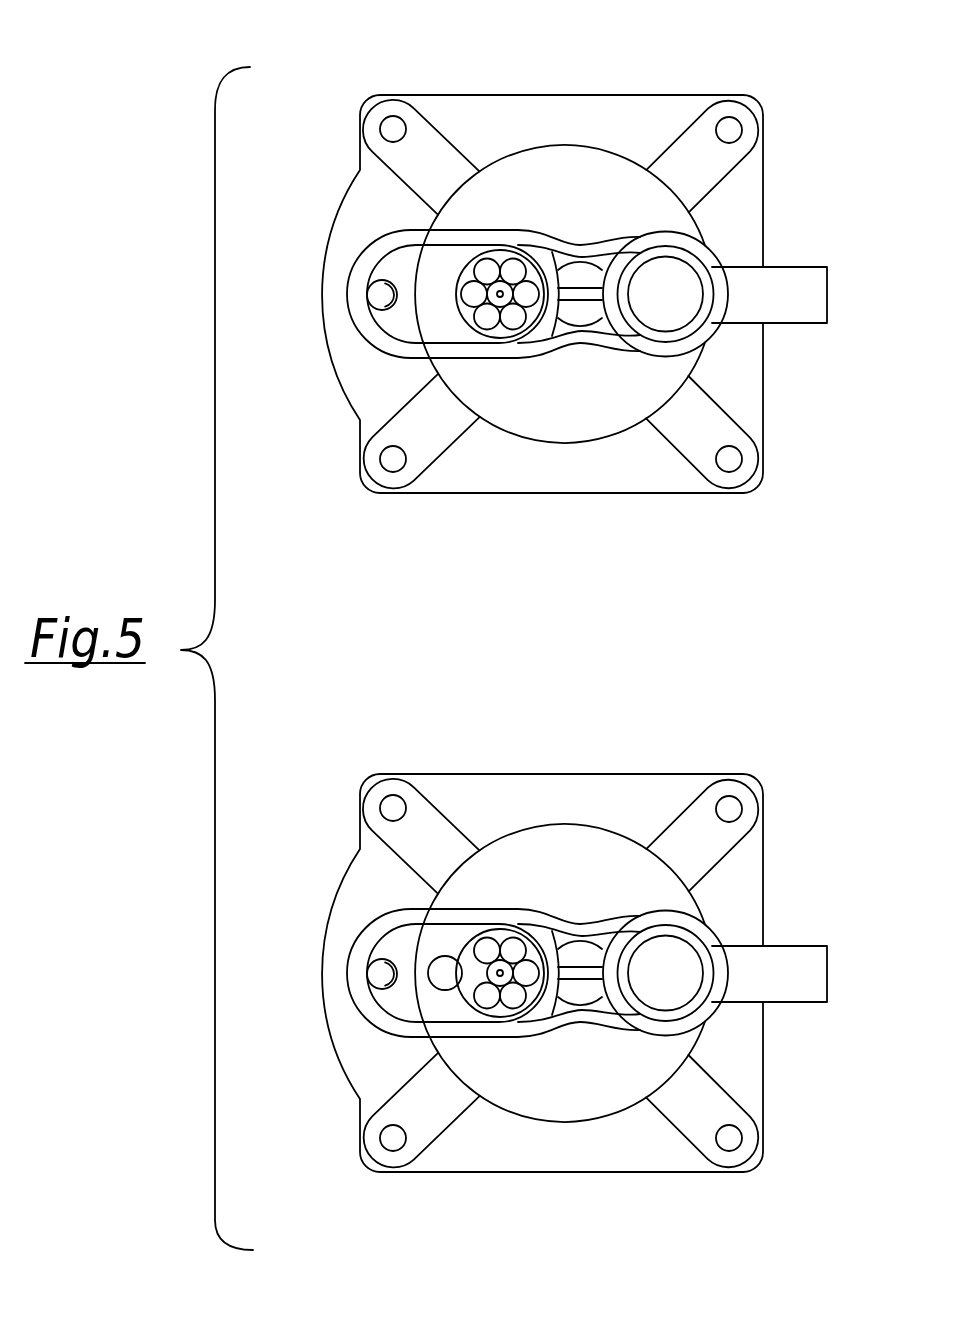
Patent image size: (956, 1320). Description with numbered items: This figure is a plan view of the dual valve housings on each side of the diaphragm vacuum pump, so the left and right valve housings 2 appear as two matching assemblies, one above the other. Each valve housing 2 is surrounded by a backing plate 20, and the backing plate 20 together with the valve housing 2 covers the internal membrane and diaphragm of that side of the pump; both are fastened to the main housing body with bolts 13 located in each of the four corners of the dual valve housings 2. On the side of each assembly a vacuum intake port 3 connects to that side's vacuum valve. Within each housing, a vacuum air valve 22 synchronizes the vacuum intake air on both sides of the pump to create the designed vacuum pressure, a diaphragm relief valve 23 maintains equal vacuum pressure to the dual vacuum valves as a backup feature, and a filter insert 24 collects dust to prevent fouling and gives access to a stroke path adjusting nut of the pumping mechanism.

The valve housing 2 is at (448, 263).
The vacuum intake port 3 is at (752, 313).
The bolt 13 is at (393, 125).
The backing plate 20 is at (517, 110).
The vacuum air valve 22 is at (672, 280).
The diaphragm relief valve 23 is at (497, 298).
The filter insert 24 is at (580, 297).